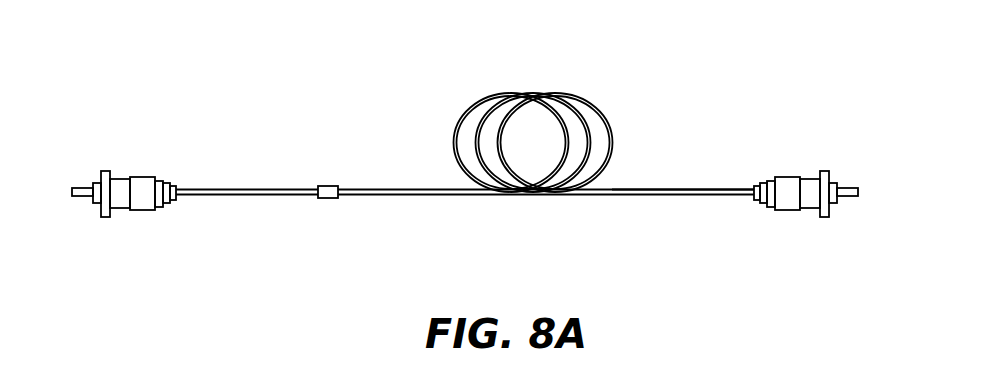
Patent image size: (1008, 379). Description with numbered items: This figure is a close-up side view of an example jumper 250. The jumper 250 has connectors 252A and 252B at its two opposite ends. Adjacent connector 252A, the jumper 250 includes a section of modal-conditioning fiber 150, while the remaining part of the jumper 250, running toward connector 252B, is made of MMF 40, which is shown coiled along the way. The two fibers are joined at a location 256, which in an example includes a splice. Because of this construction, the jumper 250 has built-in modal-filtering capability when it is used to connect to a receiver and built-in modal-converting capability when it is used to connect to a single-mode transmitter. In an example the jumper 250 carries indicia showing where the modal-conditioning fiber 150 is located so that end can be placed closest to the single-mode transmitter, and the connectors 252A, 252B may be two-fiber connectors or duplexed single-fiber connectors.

The jumper 250 is at (183, 87).
The connector 252A is at (142, 177).
The connector 252B is at (787, 180).
The modal-conditioning fiber 150 is at (262, 189).
The location 256 is at (327, 187).
The MMF 40 is at (643, 188).